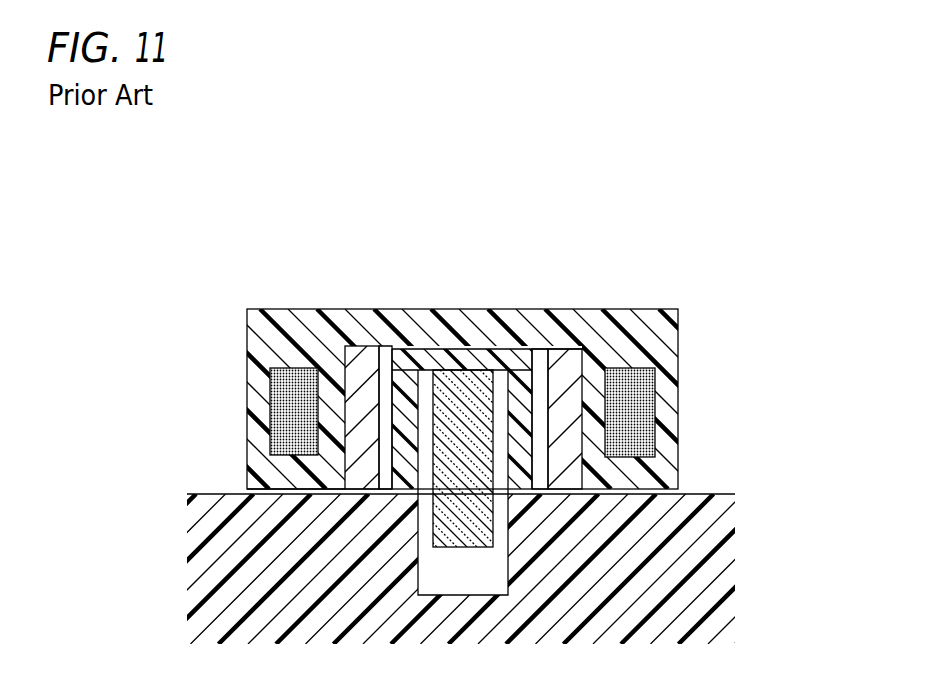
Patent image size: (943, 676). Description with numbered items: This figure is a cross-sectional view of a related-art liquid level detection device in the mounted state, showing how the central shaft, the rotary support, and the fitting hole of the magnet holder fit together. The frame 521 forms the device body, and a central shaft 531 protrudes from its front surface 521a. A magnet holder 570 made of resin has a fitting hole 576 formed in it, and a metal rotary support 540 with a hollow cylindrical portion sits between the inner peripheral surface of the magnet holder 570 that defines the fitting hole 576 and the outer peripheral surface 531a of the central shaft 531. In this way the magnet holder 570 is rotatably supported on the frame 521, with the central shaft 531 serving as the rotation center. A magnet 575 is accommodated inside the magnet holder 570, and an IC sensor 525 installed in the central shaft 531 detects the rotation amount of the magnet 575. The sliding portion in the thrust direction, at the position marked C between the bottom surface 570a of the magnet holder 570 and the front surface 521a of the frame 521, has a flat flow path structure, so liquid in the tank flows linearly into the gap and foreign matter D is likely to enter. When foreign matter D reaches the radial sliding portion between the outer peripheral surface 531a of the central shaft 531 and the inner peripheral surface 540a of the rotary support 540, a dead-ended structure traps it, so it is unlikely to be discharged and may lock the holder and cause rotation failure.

The frame 521 is at (667, 560).
The front surface of the frame 521a is at (290, 486).
The IC sensor 525 is at (441, 347).
The central shaft 531 is at (385, 395).
The outer peripheral surface of the central shaft 531a is at (577, 403).
The rotary support 540 is at (357, 367).
The inner peripheral surface of the rotary support 540a is at (537, 402).
The magnet holder 570 is at (648, 285).
The bottom surface of the magnet holder 570a is at (345, 496).
The magnet 575 is at (645, 417).
The fitting hole 576 is at (560, 390).
The foreign matter D is at (352, 360).
The thrust-direction sliding portion position C is at (684, 466).